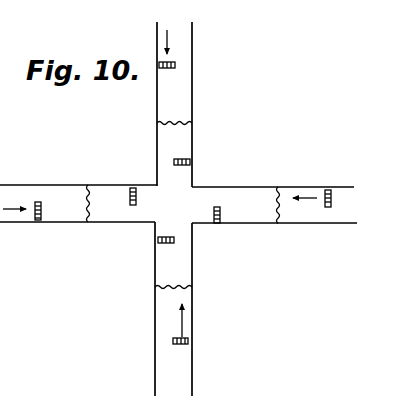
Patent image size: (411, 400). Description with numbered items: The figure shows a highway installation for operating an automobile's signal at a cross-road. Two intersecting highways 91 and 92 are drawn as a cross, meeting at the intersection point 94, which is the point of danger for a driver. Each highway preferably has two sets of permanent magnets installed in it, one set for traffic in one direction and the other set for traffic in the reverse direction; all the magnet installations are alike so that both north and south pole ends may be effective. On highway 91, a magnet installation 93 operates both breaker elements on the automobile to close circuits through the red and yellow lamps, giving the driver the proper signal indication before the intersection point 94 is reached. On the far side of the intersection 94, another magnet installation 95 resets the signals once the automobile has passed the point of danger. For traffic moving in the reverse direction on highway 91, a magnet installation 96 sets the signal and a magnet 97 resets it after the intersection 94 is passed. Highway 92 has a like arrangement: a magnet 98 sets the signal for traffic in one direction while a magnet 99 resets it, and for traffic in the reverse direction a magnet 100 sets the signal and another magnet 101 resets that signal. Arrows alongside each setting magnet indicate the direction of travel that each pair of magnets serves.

The highway 91 is at (30, 193).
The highway 92 is at (183, 138).
The magnet installation 93 is at (328, 189).
The intersection point 94 is at (175, 206).
The magnet installation 95 is at (133, 188).
The magnet installation 96 is at (38, 221).
The magnet 97 is at (217, 224).
The magnet 98 is at (166, 69).
The magnet 99 is at (158, 240).
The magnet 100 is at (189, 341).
The magnet 101 is at (190, 162).